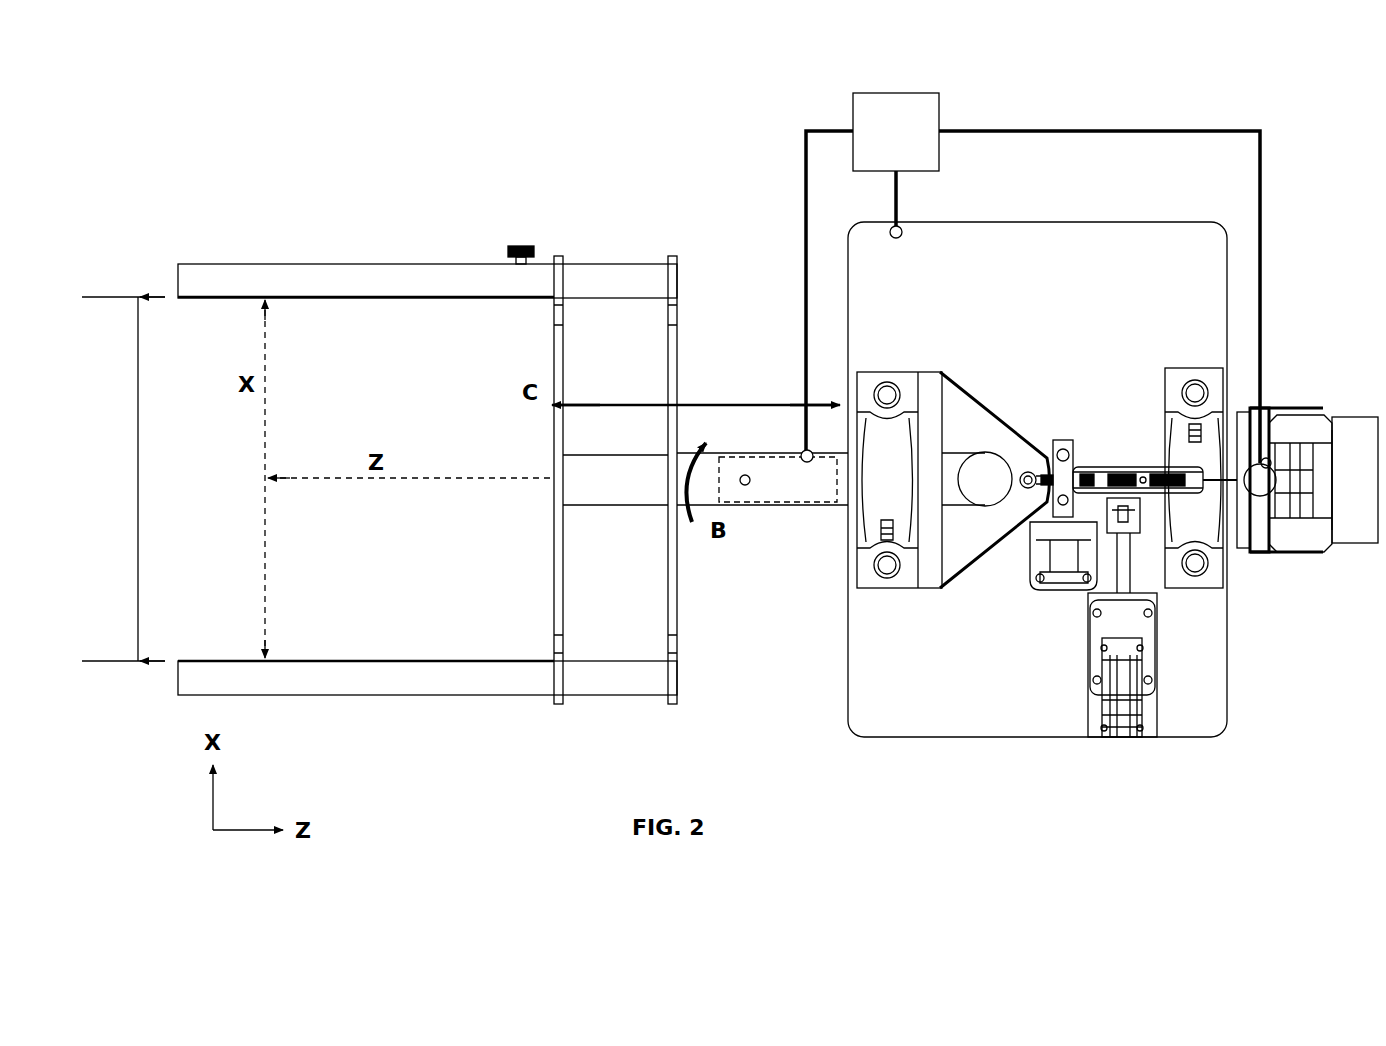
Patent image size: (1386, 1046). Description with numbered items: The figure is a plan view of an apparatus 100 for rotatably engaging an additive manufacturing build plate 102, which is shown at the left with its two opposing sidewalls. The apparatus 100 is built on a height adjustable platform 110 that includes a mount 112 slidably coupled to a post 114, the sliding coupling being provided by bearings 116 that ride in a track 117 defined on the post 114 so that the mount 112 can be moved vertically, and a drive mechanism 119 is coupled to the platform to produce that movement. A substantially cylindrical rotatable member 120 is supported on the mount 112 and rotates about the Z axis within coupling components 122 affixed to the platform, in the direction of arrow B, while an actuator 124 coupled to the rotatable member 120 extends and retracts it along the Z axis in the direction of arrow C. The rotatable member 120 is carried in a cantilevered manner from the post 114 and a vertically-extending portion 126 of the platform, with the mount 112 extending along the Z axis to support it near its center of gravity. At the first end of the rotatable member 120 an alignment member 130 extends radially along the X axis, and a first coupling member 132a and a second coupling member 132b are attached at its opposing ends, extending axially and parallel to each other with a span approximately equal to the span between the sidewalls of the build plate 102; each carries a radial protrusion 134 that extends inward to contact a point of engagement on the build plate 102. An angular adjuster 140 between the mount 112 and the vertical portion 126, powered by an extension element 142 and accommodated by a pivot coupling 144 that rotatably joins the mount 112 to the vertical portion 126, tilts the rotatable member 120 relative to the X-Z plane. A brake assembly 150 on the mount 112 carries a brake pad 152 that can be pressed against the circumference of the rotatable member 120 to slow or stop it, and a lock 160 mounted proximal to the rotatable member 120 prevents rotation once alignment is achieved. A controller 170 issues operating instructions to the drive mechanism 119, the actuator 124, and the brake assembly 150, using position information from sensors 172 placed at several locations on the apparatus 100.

The apparatus 100 is at (487, 178).
The build plate 102 is at (118, 297).
The height adjustable platform 110 is at (872, 748).
The mount 112 is at (950, 255).
The post 114 is at (1363, 417).
The bearings 116 is at (1300, 428).
The track 117 is at (1335, 500).
The drive mechanism 119 is at (1256, 495).
The rotatable member 120 is at (937, 470).
The coupling components 122 is at (877, 535).
The actuator 124 is at (806, 492).
The vertically-extending portion 126 is at (1255, 400).
The alignment member 130 is at (562, 352).
The first coupling member 132a is at (395, 680).
The second coupling member 132b is at (290, 285).
The radial protrusion 134 is at (328, 661).
The angular adjuster 140 is at (1090, 592).
The extension element 142 is at (1080, 440).
The pivot coupling 144 is at (1218, 430).
The brake assembly 150 is at (1130, 525).
The brake pad 152 is at (1126, 650).
The lock 160 is at (1052, 582).
The controller 170 is at (896, 132).
The sensors 172 is at (893, 226).